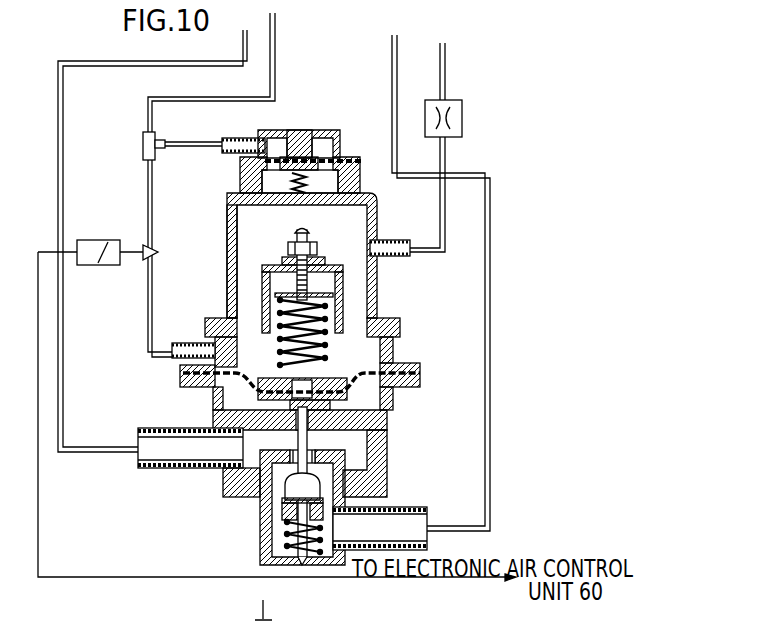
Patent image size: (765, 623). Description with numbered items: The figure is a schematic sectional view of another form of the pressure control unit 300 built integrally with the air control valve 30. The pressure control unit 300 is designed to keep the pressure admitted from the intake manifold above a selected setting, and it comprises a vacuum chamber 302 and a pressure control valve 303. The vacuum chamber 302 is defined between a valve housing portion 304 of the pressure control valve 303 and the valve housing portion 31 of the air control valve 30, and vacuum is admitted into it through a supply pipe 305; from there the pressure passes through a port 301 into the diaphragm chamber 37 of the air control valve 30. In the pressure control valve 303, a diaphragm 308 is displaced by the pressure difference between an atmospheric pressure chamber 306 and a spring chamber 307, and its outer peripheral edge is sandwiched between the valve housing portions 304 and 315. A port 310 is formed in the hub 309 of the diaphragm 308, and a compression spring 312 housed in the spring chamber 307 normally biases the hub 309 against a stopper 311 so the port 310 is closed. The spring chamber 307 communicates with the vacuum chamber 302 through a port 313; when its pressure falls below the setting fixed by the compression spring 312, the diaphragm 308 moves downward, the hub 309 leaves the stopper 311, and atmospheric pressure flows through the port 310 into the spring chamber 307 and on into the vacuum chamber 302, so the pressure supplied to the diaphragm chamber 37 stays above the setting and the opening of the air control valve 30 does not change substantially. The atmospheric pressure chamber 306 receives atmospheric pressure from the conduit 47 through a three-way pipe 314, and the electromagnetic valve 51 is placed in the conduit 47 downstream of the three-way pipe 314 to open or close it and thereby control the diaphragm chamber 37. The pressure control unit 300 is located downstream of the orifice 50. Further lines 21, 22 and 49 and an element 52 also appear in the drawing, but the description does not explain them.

The supply conduit 21 is at (101, 40).
The conduit 47 is at (276, 43).
The conduit 22 is at (393, 80).
The conduit 49 is at (446, 210).
The orifice 50 is at (462, 118).
The three-way pipe 314 is at (143, 141).
The solenoid valve 52 is at (108, 265).
The electromagnetic valve 51 is at (145, 258).
The atmospheric pressure chamber 306 is at (278, 146).
The pressure control valve 303 is at (304, 130).
The hub 309 is at (282, 158).
The stopper 311 is at (320, 158).
The diaphragm 308 is at (333, 146).
The valve housing portion 315 is at (361, 164).
The port 310 is at (268, 174).
The compression spring 312 is at (310, 186).
The spring chamber 307 is at (286, 186).
The pressure control unit 300 is at (378, 212).
The valve housing portion 304 is at (237, 228).
The vacuum chamber 302 is at (240, 278).
The port 301 is at (248, 325).
The port 313 is at (290, 248).
The diaphragm chamber 37 is at (350, 350).
The valve housing portion 31 is at (407, 367).
The supply pipe 305 is at (399, 258).
The air control valve 30 is at (222, 480).